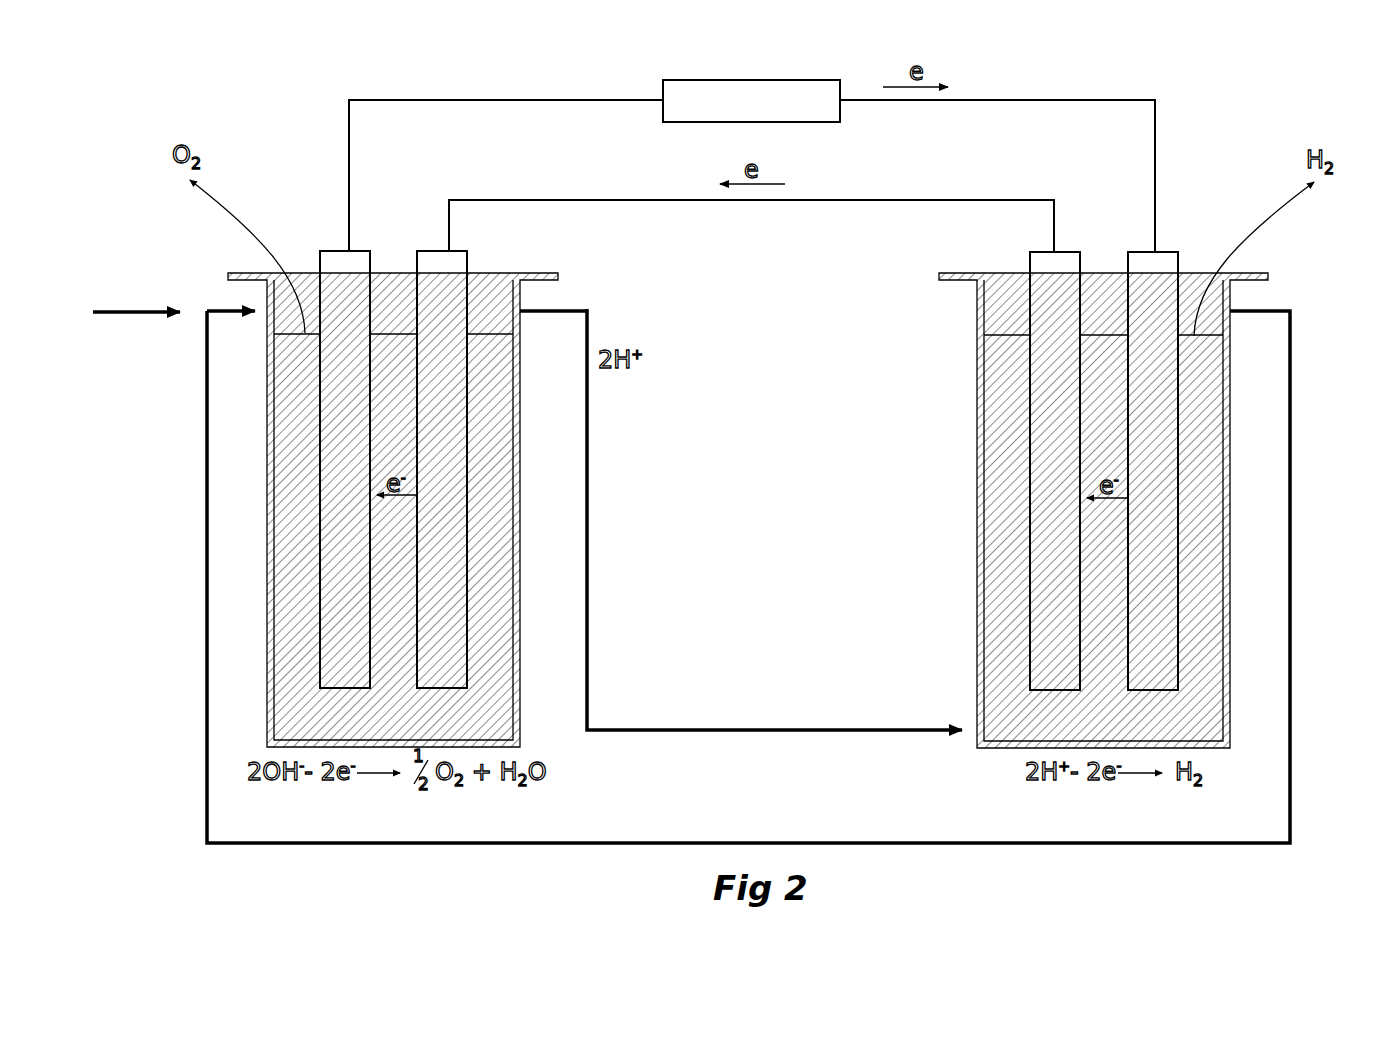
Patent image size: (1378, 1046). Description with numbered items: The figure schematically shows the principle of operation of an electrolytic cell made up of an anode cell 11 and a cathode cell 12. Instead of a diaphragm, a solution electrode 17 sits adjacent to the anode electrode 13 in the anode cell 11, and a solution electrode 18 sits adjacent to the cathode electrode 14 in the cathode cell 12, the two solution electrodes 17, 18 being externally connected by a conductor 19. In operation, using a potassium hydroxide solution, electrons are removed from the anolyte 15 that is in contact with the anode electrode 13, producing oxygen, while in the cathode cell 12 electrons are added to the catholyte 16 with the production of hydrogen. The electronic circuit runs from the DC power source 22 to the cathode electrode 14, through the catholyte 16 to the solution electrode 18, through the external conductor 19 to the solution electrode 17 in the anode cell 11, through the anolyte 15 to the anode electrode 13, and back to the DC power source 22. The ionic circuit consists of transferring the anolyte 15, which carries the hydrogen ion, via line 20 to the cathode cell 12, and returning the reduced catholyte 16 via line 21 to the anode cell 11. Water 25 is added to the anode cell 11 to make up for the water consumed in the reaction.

The anode cell 11 is at (268, 530).
The cathode cell 12 is at (1229, 522).
The anode electrode 13 is at (318, 673).
The cathode electrode 14 is at (1179, 678).
The anolyte 15 is at (293, 459).
The catholyte 16 is at (1205, 463).
The solution electrode 17 is at (468, 624).
The solution electrode 18 is at (1029, 462).
The conductor 19 is at (880, 198).
The line 20 is at (589, 480).
The line 21 is at (1020, 846).
The DC power source 22 is at (710, 96).
The water 25 is at (133, 310).